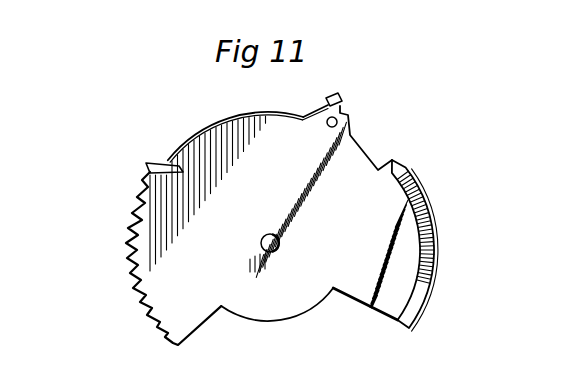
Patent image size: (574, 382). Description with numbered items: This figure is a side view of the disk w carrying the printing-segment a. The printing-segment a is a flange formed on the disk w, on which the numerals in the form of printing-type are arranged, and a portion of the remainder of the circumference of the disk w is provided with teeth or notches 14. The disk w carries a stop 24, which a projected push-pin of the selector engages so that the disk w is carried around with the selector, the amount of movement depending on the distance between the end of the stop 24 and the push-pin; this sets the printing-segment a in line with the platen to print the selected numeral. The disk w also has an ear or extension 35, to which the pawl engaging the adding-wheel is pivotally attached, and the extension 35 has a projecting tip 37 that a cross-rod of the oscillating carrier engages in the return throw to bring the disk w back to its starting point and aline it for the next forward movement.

The teeth or notches 14 is at (128, 245).
The stop 24 is at (165, 163).
The projecting tip 37 is at (343, 103).
The ear or extension 35 is at (348, 127).
The printing-segment a is at (433, 214).
The disk w is at (309, 265).